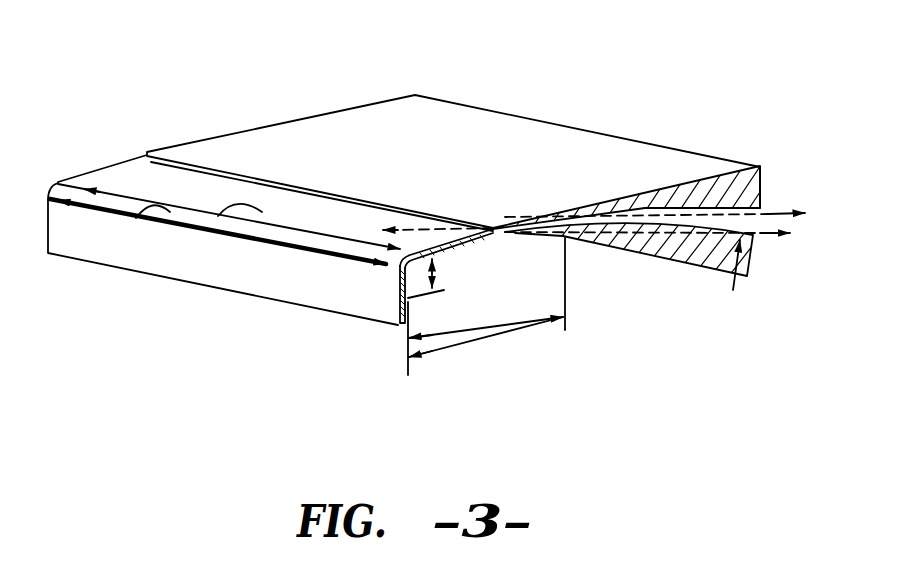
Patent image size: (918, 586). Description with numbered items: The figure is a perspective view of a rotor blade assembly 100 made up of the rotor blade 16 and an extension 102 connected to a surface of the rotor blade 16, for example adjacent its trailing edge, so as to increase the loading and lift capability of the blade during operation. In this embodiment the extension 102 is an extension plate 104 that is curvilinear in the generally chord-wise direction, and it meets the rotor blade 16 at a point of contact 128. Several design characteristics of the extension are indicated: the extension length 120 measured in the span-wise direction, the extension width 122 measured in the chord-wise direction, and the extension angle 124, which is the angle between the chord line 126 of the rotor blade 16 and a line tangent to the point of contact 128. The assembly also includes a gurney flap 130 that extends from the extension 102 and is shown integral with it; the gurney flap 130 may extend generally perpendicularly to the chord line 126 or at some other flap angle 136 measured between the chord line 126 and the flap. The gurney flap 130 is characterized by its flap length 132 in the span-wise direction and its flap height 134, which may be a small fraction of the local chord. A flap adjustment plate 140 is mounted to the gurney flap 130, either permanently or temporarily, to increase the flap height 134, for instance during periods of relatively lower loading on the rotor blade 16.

The rotor blade assembly 100 is at (247, 77).
The extension 102 is at (75, 152).
The extension plate 104 is at (151, 178).
The rotor blade 16 is at (361, 128).
The extension length 120 is at (233, 207).
The extension width 122 is at (523, 329).
The extension angle 124 is at (740, 206).
The chord line 126 is at (770, 214).
The point of contact 128 is at (493, 248).
The gurney flap 130 is at (411, 285).
The flap length 132 is at (140, 207).
The flap height 134 is at (434, 272).
The flap angle 136 is at (468, 252).
The flap adjustment plate 140 is at (289, 273).